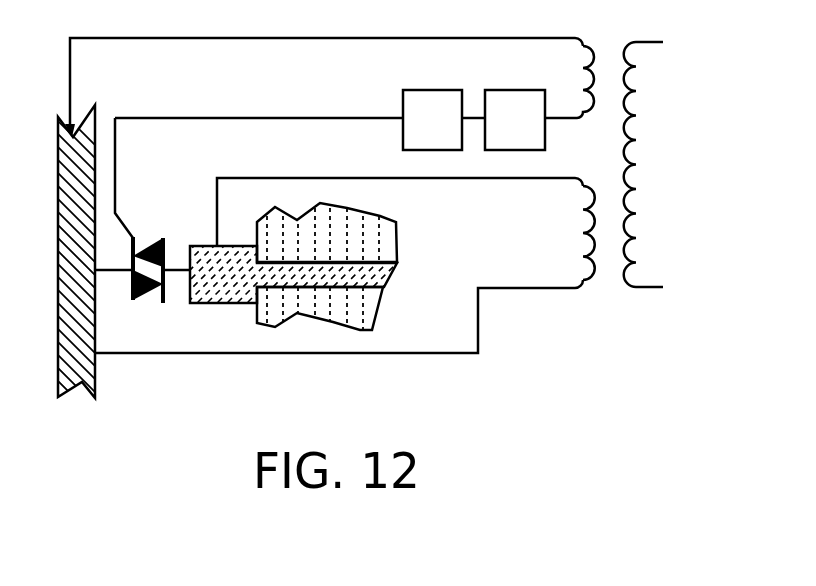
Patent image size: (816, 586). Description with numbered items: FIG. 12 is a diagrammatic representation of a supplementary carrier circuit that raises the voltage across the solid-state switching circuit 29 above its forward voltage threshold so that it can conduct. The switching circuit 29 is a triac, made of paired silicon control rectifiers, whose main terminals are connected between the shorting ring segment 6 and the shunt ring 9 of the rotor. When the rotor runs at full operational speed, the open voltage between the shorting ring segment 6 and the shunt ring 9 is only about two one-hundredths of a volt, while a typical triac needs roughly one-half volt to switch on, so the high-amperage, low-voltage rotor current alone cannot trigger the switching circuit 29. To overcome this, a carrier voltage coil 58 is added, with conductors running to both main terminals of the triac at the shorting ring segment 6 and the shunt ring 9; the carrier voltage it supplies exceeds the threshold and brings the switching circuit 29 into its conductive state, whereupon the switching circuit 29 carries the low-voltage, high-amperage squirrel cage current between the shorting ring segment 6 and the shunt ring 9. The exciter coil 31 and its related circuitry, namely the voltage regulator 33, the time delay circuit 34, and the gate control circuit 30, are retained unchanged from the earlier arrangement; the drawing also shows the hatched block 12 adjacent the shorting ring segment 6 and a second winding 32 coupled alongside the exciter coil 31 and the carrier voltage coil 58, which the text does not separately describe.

The shunt ring 9 is at (58, 324).
The gate control circuit 30 is at (124, 221).
The solid-state switching circuit 29 is at (147, 302).
The shorting ring segment 6 is at (230, 304).
The insulating block 12 is at (396, 236).
The time delay circuit 34 is at (403, 104).
The voltage regulator 33 is at (548, 131).
The exciter coil 31 is at (580, 73).
The carrier voltage coil 58 is at (586, 248).
The secondary winding 32 is at (630, 163).